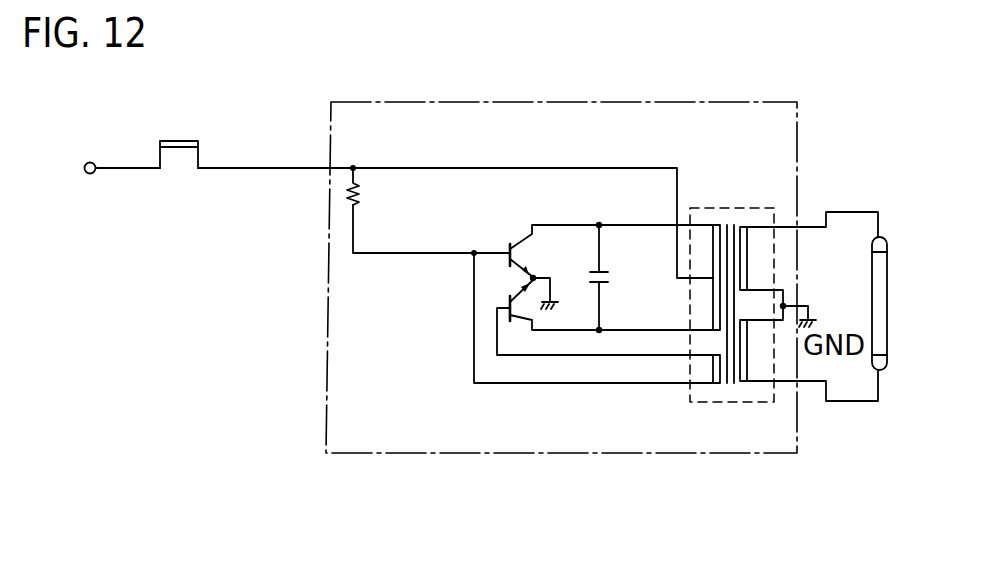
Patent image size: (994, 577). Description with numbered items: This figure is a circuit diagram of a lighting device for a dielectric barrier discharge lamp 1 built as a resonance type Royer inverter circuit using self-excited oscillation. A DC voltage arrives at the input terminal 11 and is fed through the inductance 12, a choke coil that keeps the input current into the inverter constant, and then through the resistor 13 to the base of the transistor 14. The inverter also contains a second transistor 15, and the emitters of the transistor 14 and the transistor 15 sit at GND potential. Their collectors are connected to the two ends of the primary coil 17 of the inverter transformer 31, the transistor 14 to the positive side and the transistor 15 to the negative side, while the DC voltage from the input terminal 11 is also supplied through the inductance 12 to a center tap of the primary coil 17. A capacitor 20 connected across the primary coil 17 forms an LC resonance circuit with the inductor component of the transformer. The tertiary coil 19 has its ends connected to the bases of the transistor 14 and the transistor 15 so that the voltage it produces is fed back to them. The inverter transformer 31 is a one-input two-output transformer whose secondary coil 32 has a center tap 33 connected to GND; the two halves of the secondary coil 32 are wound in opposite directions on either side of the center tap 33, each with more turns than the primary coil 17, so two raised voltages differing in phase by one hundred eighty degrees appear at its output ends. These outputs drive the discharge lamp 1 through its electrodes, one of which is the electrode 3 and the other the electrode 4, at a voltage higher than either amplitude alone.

The dielectric barrier discharge lamp 1 is at (900, 293).
The electrode 3 is at (888, 247).
The electrode 4 is at (886, 365).
The input terminal 11 is at (96, 162).
The inductance 12 is at (173, 178).
The resistor 13 is at (366, 200).
The transistor 14 is at (510, 234).
The transistor 15 is at (498, 297).
The primary coil 17 is at (749, 277).
The tertiary coil 19 is at (703, 372).
The capacitor 20 is at (587, 272).
The inverter transformer 31 is at (737, 202).
The secondary coil 32 is at (753, 247).
The center tap 33 is at (784, 305).